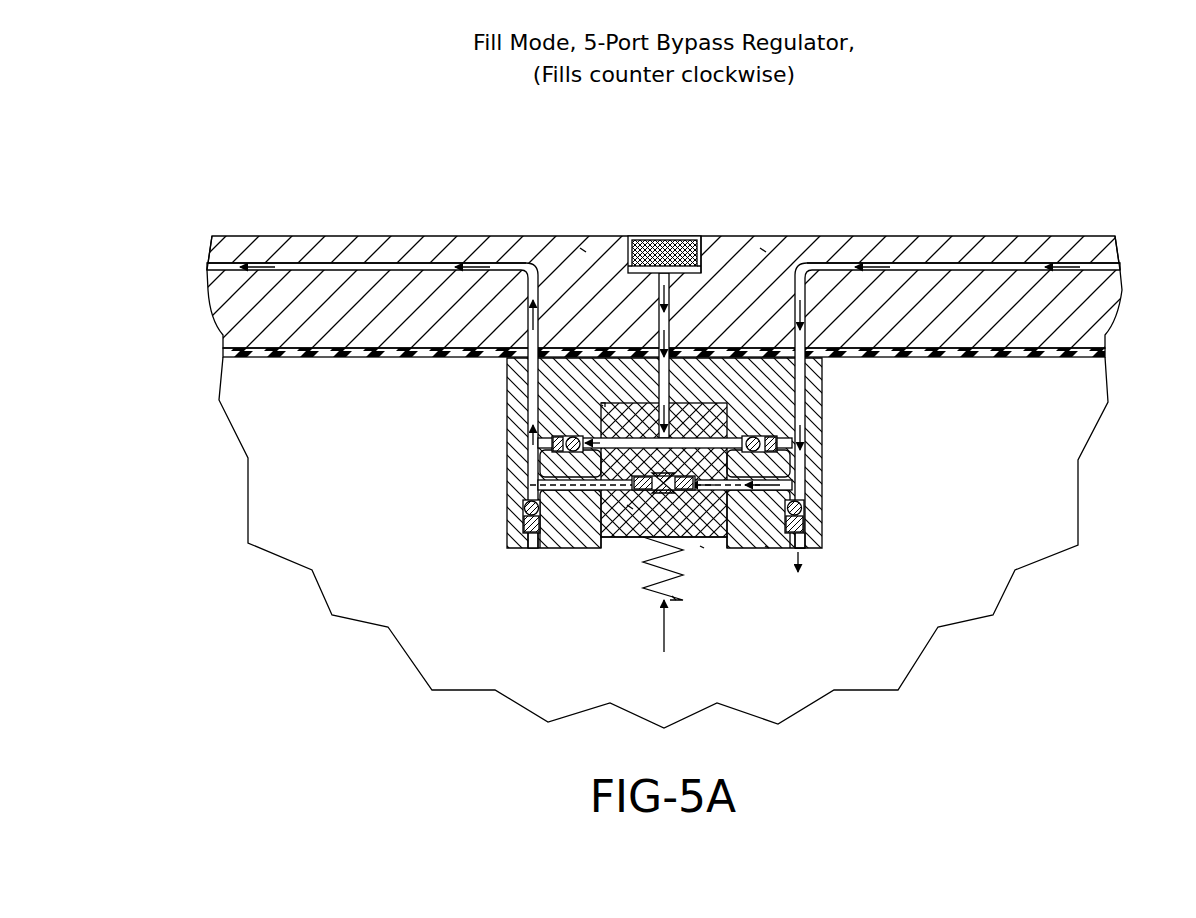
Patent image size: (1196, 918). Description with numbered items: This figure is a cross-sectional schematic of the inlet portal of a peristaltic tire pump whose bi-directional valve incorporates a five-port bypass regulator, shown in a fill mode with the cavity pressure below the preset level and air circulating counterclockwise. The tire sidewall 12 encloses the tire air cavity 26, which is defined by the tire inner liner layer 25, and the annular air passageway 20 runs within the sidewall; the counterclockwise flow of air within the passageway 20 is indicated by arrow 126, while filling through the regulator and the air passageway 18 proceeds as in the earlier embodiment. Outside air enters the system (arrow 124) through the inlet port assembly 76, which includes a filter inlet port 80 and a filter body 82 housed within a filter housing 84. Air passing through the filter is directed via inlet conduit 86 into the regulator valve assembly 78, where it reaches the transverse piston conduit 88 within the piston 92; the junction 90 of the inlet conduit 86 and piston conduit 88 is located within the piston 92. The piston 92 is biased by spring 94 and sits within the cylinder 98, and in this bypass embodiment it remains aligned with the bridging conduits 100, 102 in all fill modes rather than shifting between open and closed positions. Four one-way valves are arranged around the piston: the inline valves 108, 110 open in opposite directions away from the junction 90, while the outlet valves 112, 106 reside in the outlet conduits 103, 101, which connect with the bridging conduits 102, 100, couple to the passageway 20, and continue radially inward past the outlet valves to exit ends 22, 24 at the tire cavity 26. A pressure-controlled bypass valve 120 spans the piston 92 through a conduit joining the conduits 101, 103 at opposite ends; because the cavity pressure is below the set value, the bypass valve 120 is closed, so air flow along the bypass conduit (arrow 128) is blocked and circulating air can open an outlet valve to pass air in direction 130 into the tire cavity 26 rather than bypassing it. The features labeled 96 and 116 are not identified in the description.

The sidewall 12 is at (258, 236).
The air passageway 18 is at (332, 267).
The annular air passageway 20 is at (205, 264).
The exit end 22 is at (525, 546).
The exit end 24 is at (805, 548).
The tire inner liner layer 25 is at (275, 362).
The tire air cavity 26 is at (468, 658).
The inlet port assembly 76 is at (708, 222).
The regulator valve assembly 78 is at (768, 552).
The filter inlet port 80 is at (685, 229).
The filter body 82 is at (645, 252).
The filter housing 84 is at (620, 250).
The inlet conduit 86 is at (765, 250).
The transverse piston conduit 88 is at (627, 443).
The junction 90 is at (700, 550).
The piston 92 is at (631, 558).
The spring 94 is at (675, 600).
The spring force 96 is at (664, 650).
The cylinder 98 is at (822, 500).
The bridging conduit 100 is at (822, 392).
The outlet conduit 101 is at (820, 453).
The bridging conduit 102 is at (590, 437).
The outlet conduit 103 is at (535, 468).
The outlet valve 106 is at (805, 520).
The inline valve 108 is at (780, 440).
The inline valve 110 is at (556, 440).
The outlet valve 112 is at (527, 520).
The inlet passage 116 is at (664, 228).
The bypass valve 120 is at (630, 507).
The arrow 124 is at (578, 250).
The arrow 126 is at (300, 267).
The arrow 128 is at (698, 488).
The direction 130 is at (796, 552).